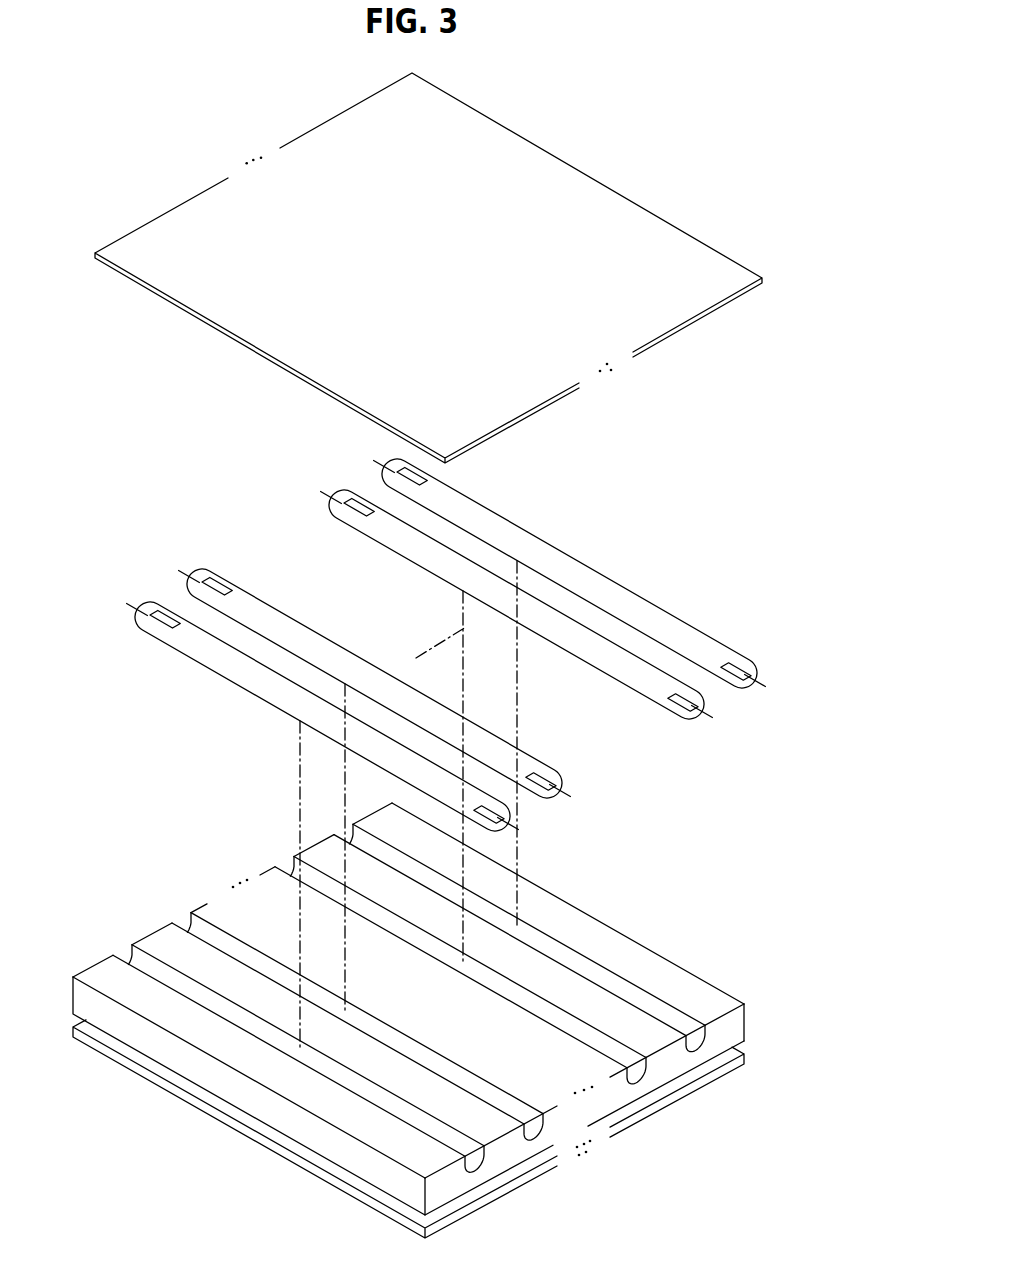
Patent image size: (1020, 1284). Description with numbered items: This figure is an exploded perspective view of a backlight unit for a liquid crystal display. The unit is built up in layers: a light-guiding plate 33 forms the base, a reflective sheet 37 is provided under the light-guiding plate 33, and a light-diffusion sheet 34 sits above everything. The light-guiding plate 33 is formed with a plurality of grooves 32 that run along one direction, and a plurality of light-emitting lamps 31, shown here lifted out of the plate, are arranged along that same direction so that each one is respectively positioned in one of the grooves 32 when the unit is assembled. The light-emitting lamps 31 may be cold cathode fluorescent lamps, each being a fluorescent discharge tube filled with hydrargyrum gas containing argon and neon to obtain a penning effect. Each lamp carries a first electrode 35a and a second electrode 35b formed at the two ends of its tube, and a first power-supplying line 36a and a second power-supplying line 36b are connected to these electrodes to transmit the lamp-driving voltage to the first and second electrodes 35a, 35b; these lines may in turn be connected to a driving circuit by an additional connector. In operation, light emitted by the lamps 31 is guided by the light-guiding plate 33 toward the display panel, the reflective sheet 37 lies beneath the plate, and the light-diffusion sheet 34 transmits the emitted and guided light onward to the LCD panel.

The light-emitting lamp 31 is at (290, 627).
The groove 32 is at (693, 1049).
The light-guiding plate 33 is at (612, 942).
The light-diffusion sheet 34 is at (655, 315).
The first electrode 35a is at (221, 588).
The second electrode 35b is at (543, 778).
The first power-supplying line 36a is at (192, 578).
The second power-supplying line 36b is at (573, 797).
The reflective sheet 37 is at (633, 1113).